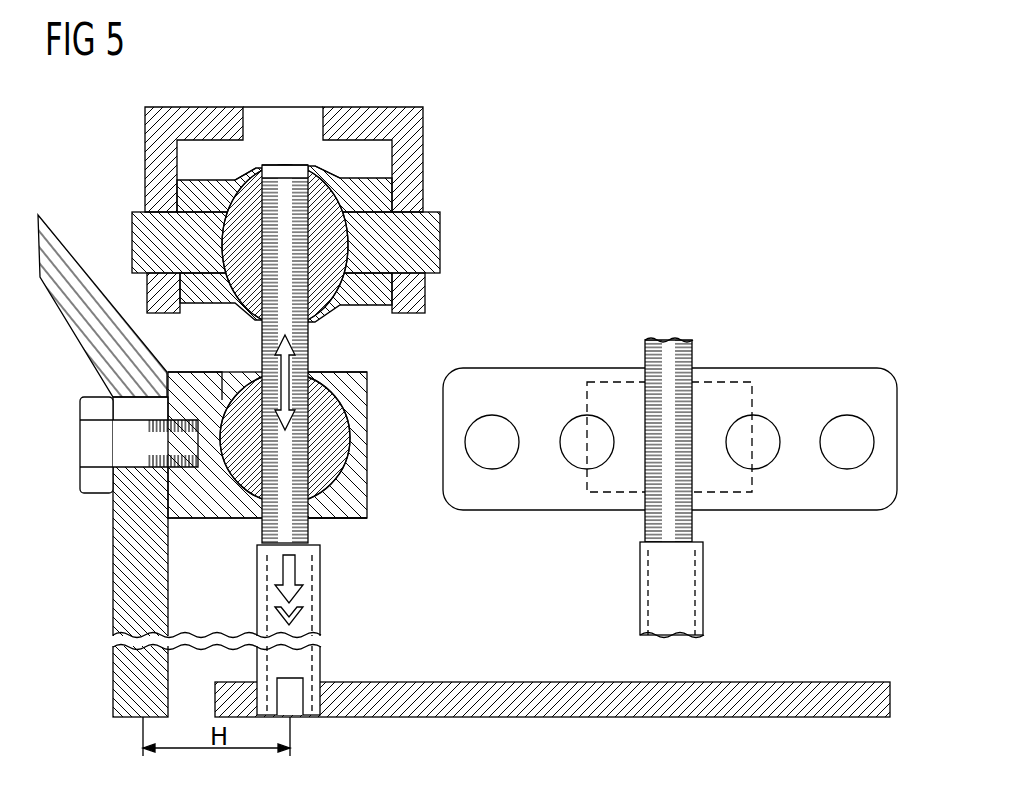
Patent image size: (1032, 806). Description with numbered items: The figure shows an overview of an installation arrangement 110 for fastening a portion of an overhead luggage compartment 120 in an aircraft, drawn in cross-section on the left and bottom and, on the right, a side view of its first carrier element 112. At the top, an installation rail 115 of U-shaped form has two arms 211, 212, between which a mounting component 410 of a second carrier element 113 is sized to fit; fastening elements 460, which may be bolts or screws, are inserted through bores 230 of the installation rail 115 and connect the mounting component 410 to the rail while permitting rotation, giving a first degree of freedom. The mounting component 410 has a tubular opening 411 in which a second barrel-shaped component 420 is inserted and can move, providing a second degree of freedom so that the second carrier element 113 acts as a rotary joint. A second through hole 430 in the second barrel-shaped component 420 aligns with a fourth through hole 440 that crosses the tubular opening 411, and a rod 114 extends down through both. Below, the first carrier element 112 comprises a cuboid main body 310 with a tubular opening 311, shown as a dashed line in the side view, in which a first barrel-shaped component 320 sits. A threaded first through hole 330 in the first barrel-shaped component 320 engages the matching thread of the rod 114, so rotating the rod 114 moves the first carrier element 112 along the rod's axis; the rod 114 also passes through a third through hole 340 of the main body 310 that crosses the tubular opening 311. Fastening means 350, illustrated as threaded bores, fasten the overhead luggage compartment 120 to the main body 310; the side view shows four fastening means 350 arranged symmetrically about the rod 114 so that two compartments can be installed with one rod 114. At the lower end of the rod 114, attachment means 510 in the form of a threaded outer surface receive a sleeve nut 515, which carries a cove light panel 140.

The installation arrangement 110 is at (692, 164).
The first carrier element 112 is at (353, 524).
The second carrier element 113 is at (380, 314).
The rod 114 is at (286, 163).
The installation rail 115 is at (286, 154).
The overhead luggage compartment 120 is at (125, 582).
The cove light panel 140 is at (530, 700).
The arm 211 is at (157, 157).
The arm 212 is at (423, 128).
The bore 230 is at (150, 202).
The main body 310 is at (200, 518).
The tubular opening 311 is at (357, 467).
The first barrel-shaped component 320 is at (350, 433).
The first through hole 330 is at (257, 373).
The third through hole 340 is at (313, 370).
The fastening means 350 is at (112, 393).
The mounting component 410 is at (385, 194).
The tubular opening 411 is at (333, 170).
The second barrel-shaped component 420 is at (333, 317).
The second through hole 430 is at (248, 176).
The fourth through hole 440 is at (266, 165).
The fastening element 460 is at (135, 238).
The attachment means 510 is at (320, 663).
The sleeve nut 515 is at (310, 717).